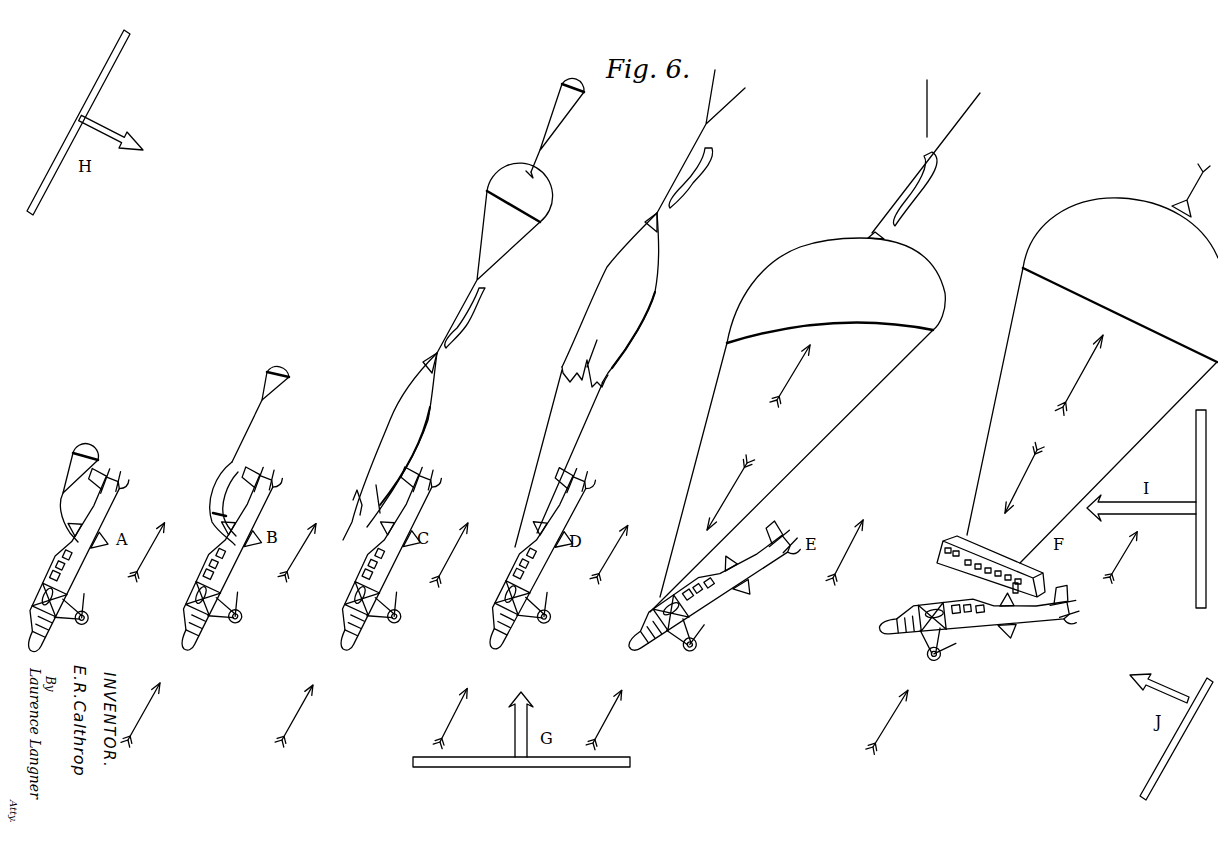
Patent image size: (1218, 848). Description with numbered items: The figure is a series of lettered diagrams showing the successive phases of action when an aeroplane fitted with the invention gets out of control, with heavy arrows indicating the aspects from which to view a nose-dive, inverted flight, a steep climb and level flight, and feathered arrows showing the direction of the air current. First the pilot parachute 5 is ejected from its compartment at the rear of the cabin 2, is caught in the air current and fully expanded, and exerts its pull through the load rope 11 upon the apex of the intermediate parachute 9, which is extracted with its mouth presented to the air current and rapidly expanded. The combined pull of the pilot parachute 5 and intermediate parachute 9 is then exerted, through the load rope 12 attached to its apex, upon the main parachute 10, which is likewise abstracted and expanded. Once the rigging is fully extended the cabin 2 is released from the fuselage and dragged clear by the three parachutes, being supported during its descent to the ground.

The cabin 2 is at (967, 569).
The pilot parachute 5 is at (330, 285).
The intermediate parachute 9 is at (724, 108).
The main parachute 10 is at (905, 311).
The load rope 11 is at (538, 153).
The load rope 12 is at (457, 312).